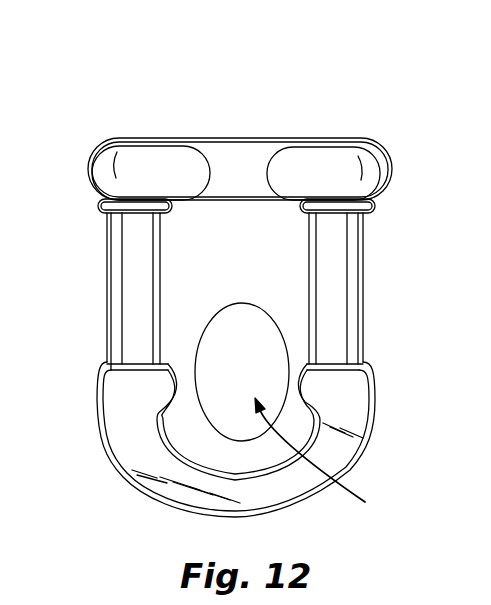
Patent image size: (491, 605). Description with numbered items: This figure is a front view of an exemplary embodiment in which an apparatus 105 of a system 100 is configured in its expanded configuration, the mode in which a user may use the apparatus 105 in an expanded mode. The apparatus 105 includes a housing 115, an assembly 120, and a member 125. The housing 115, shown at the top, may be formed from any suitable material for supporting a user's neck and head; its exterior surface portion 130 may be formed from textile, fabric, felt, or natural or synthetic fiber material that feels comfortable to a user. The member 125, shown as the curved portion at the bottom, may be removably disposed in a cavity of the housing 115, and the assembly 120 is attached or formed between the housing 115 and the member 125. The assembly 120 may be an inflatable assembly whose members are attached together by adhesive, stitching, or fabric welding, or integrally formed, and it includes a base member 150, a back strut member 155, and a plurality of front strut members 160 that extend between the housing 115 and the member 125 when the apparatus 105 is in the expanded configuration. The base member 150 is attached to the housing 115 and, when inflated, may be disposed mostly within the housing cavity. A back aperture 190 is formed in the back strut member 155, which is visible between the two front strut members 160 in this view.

The system 100 is at (373, 85).
The apparatus 105 is at (385, 123).
The housing 115 is at (138, 139).
The exterior surface portion 130 is at (318, 167).
The base member 150 is at (100, 205).
The assembly 120 is at (107, 330).
The front strut members 160 is at (125, 280).
The member 125 is at (112, 467).
The back strut member 155 is at (247, 285).
The back aperture 190 is at (317, 461).